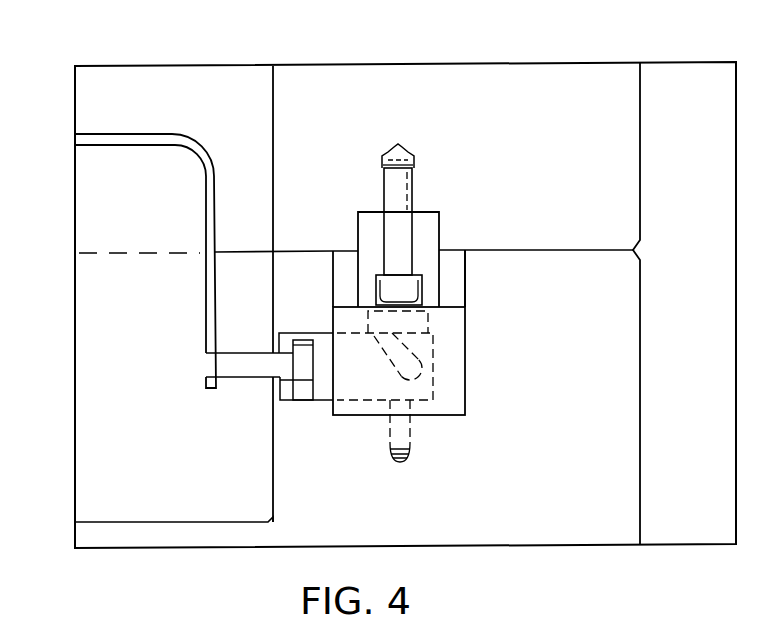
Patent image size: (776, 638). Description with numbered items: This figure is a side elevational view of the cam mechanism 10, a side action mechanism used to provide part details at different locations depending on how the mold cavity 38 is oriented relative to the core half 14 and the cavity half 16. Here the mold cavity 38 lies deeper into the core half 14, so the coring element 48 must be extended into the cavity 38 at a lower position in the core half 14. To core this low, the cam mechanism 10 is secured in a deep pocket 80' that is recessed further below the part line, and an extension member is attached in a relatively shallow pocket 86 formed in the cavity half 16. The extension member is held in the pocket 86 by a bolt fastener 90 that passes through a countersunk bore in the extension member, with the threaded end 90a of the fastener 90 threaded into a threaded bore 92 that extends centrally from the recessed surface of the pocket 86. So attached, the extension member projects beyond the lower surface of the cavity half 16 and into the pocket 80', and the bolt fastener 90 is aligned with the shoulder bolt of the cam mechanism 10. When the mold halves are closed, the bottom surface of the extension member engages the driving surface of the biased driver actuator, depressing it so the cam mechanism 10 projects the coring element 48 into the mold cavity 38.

The cam mechanism 10 is at (452, 422).
The core half 14 is at (611, 512).
The cavity half 16 is at (603, 95).
The mold cavity 38 is at (208, 384).
The coring element 48 is at (255, 384).
The pocket 80' is at (502, 244).
The pocket 86 is at (358, 225).
The bolt fastener 90 is at (393, 198).
The threaded end 90a is at (385, 152).
The threaded bore 92 is at (413, 152).